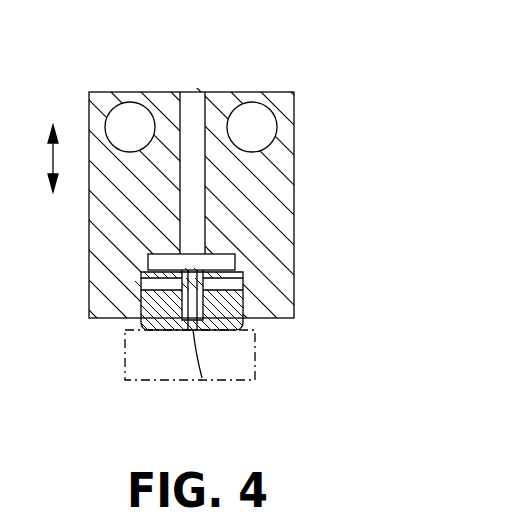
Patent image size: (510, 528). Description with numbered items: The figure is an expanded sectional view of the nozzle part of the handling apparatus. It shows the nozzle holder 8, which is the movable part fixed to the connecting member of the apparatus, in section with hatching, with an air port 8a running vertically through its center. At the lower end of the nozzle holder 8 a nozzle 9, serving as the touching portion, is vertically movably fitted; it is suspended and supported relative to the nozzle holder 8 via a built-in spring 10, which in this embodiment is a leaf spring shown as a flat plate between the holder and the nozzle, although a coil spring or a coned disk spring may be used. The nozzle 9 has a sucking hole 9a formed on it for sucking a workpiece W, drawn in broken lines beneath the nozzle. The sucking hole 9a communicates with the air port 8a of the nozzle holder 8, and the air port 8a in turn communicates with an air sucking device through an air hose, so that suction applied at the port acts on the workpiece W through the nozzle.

The nozzle holder 8 is at (285, 172).
The air port 8a is at (193, 103).
The spring 10 is at (236, 266).
The nozzle 9 is at (240, 328).
The sucking hole 9a is at (202, 378).
The workpiece W is at (183, 380).